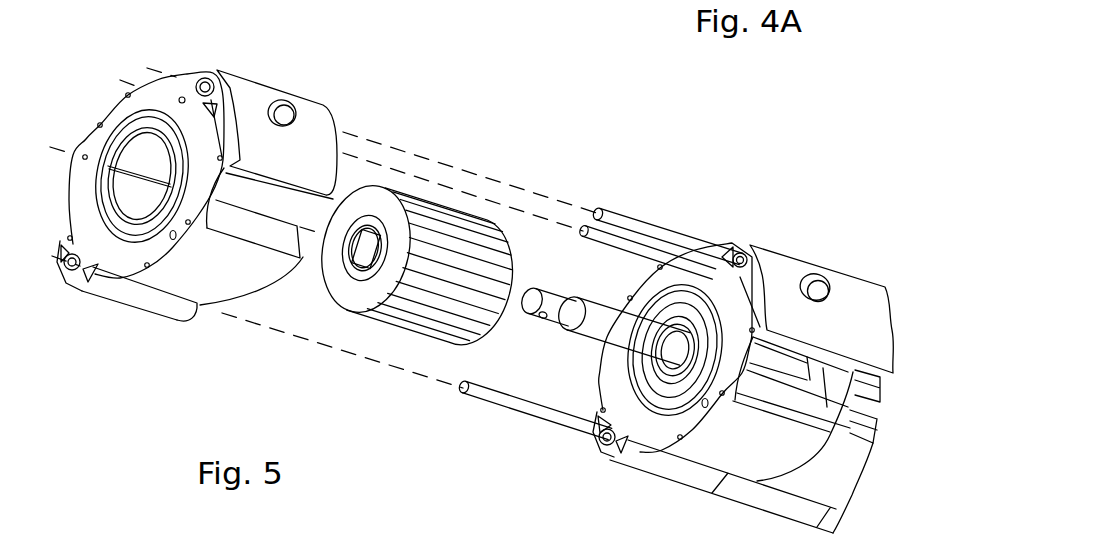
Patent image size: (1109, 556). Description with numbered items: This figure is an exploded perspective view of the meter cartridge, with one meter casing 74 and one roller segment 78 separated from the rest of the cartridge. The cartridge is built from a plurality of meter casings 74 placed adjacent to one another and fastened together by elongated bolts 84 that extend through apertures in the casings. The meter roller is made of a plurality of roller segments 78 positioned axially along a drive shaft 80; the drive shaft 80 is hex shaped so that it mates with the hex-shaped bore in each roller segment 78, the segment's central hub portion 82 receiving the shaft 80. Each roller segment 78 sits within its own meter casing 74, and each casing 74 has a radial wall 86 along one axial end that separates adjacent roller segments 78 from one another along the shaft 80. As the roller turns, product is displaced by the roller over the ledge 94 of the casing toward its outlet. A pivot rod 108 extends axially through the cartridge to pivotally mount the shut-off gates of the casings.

The meter casing 74 is at (259, 90).
The roller segment 78 is at (436, 215).
The drive shaft 80 is at (592, 338).
The rotor hub 82 is at (355, 258).
The elongated bolt 84 is at (645, 224).
The radial wall 86 is at (120, 117).
The ledge 94 is at (258, 212).
The pivot rod 108 is at (606, 244).